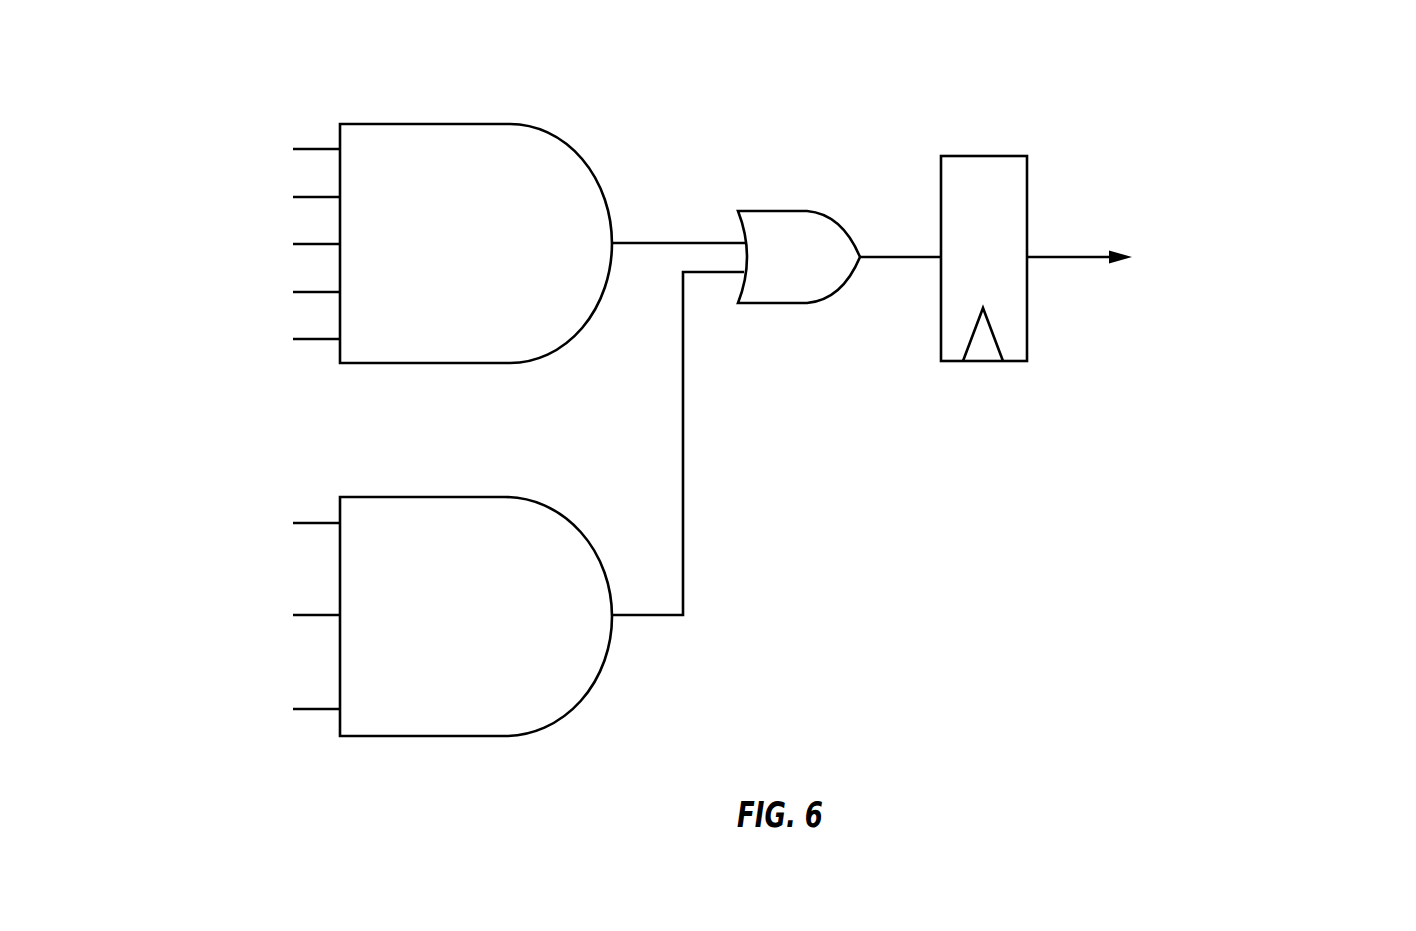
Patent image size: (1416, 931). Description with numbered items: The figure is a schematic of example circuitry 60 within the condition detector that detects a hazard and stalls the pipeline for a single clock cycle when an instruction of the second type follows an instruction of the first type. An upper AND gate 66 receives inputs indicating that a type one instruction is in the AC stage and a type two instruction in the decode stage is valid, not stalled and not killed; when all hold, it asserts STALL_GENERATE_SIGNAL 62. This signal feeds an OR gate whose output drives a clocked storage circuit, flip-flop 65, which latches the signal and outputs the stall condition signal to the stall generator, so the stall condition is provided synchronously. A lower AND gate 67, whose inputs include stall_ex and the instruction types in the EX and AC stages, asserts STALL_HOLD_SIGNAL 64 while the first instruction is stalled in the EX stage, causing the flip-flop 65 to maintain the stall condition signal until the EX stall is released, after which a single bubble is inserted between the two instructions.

The circuitry 60 is at (826, 75).
The STALL_GENERATE_SIGNAL 62 is at (705, 242).
The STALL_HOLD_SIGNAL 64 is at (698, 274).
The flip-flop 65 is at (968, 274).
The AND gate 66 is at (460, 258).
The AND gate 67 is at (460, 631).